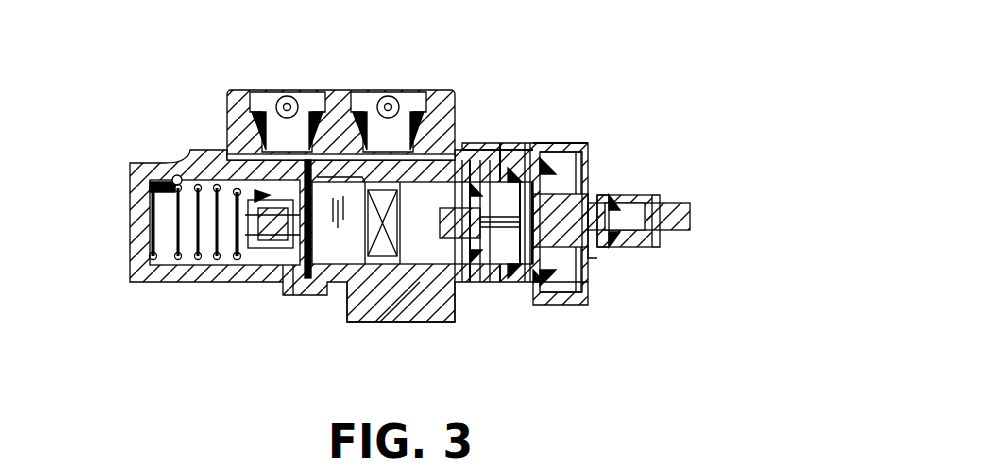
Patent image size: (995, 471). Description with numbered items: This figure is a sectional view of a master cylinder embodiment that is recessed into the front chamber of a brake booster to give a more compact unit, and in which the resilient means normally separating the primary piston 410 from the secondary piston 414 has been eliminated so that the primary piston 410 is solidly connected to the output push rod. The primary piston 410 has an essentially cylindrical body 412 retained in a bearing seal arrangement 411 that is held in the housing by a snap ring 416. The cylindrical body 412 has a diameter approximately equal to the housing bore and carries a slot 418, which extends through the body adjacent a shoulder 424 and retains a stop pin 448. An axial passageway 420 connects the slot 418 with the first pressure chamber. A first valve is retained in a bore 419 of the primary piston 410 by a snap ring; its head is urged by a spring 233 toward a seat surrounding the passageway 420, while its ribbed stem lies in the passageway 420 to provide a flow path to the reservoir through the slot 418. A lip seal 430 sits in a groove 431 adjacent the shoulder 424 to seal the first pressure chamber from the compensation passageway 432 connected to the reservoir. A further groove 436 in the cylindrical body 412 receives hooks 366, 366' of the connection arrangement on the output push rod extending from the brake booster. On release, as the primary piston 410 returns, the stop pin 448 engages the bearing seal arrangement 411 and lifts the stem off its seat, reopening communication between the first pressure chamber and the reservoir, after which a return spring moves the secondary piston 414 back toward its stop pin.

The spring 233 is at (365, 262).
The hook 366 is at (666, 164).
The hook 366' is at (655, 255).
The primary piston 410 is at (598, 180).
The bearing seal arrangement 411 is at (570, 143).
The cylindrical body 412 is at (515, 255).
The secondary piston 414 is at (362, 255).
The snap ring 416 is at (573, 285).
The slot 418 is at (565, 160).
The bore 419 is at (490, 188).
The axial passageway 420 is at (500, 185).
The shoulder 424 is at (530, 175).
The lip seal 430 is at (580, 253).
The groove 431 is at (548, 292).
The compensation passageway 432 is at (515, 168).
The groove 436 is at (617, 203).
The stop pin 448 is at (540, 280).